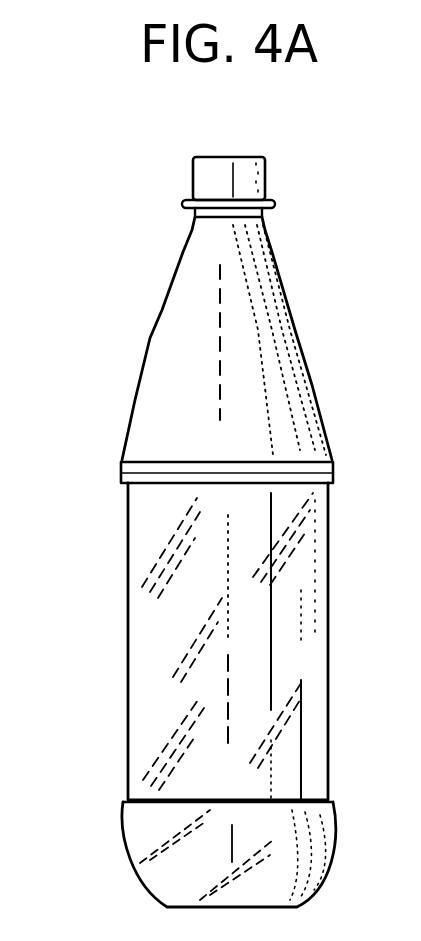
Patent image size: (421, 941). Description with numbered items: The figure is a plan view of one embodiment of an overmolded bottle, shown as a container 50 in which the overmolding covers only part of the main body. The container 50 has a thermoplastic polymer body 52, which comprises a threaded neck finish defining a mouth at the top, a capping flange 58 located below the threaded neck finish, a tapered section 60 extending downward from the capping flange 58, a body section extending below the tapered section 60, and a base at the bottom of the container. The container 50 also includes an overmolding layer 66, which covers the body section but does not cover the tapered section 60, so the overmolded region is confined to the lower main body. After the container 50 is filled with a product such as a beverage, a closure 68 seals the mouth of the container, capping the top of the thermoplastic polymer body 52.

The container 50 is at (90, 244).
The thermoplastic polymer body 52 is at (287, 331).
The capping flange 58 is at (282, 204).
The tapered section 60 is at (150, 338).
The overmolding layer 66 is at (137, 725).
The closure 68 is at (209, 157).